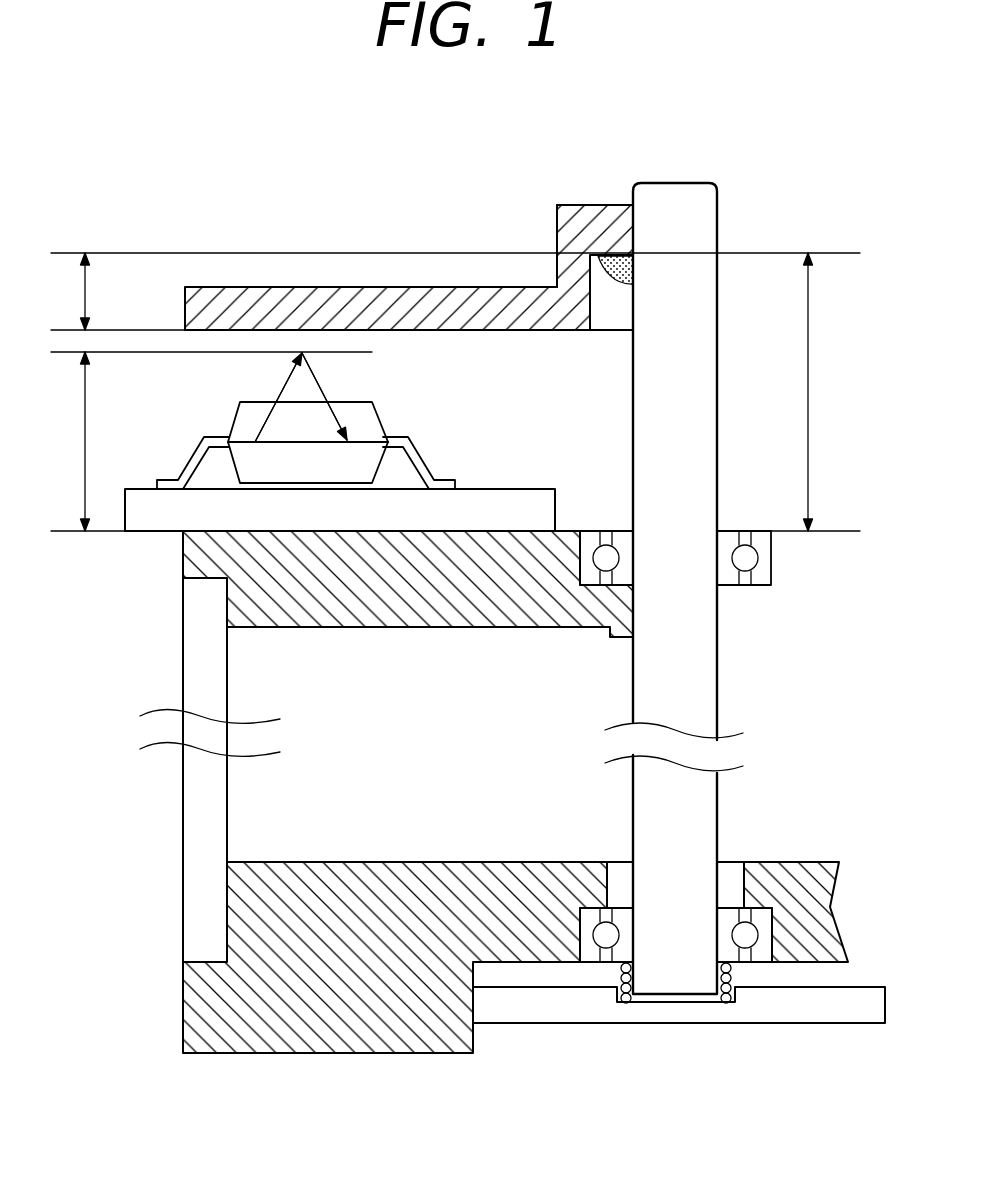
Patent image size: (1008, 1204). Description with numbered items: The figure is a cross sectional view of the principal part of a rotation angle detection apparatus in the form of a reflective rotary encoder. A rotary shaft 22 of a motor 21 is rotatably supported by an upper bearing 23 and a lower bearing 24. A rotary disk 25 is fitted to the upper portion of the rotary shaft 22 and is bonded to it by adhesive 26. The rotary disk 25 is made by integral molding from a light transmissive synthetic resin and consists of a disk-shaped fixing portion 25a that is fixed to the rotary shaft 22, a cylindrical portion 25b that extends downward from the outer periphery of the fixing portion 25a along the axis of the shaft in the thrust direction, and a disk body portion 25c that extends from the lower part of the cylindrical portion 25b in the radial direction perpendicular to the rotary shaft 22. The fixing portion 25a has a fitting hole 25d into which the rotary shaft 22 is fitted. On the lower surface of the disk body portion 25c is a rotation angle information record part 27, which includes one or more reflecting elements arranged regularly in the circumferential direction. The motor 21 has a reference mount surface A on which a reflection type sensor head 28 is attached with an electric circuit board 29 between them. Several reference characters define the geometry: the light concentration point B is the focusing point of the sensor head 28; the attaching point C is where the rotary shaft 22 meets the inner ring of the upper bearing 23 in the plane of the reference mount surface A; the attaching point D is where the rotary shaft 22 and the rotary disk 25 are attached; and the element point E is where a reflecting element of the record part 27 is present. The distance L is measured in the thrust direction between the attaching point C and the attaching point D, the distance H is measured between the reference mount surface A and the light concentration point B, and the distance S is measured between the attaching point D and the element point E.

The motor 21 is at (160, 893).
The rotary shaft 22 is at (703, 208).
The upper bearing 23 is at (772, 563).
The lower bearing 24 is at (772, 942).
The rotary disk 25 is at (220, 276).
The fixing portion 25a is at (590, 217).
The cylindrical portion 25b is at (562, 262).
The disk body portion 25c is at (390, 302).
The fitting hole 25d is at (620, 234).
The adhesive 26 is at (633, 267).
The rotation angle information record part 27 is at (302, 352).
The reflection type sensor head 28 is at (400, 420).
The electric circuit board 29 is at (158, 518).
The distance between attaching point D and element point E S is at (73, 291).
The distance between reference mount surface A and light concentration point B H is at (73, 441).
The distance between attaching point C and attaching point D L is at (819, 392).
The attaching point of rotary shaft and rotary disk D is at (633, 251).
The reference mount surface A is at (838, 531).
The light concentration point B is at (303, 352).
The attaching point of rotary shaft and inner ring of upper bearing C is at (633, 531).
The element point E is at (300, 353).